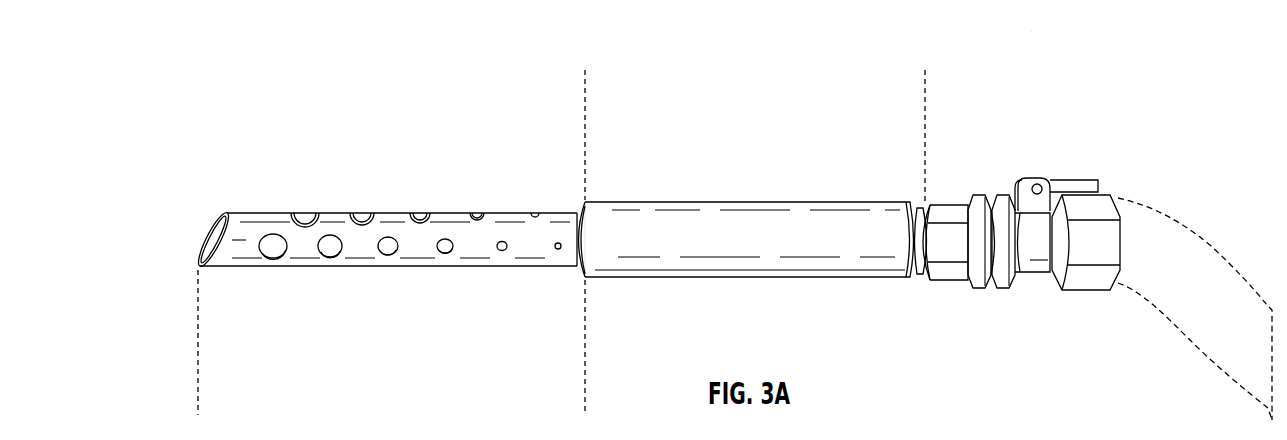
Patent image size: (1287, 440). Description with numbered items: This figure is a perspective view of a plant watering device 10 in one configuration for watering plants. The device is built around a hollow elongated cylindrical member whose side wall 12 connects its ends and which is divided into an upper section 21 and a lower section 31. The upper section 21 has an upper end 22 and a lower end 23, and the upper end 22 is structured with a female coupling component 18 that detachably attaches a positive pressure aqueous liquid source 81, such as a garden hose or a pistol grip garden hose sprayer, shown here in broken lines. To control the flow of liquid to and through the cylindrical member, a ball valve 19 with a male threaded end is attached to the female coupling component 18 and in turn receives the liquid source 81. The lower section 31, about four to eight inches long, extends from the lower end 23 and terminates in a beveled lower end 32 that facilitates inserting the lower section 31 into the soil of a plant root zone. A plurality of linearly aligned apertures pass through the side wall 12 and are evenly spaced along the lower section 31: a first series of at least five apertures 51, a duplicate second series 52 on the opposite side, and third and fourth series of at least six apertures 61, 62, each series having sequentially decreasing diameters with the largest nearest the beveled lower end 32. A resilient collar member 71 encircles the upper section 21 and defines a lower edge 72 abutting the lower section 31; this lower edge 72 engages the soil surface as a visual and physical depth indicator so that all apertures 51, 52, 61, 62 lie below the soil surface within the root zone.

The plant watering device 10 is at (1032, 30).
The side wall 12 is at (576, 212).
The female coupling component 18 is at (940, 207).
The ball valve 19 is at (1097, 291).
The upper section 21 is at (924, 89).
The upper end 22 is at (888, 294).
The lower end 23 is at (613, 182).
The lower section 31 is at (584, 403).
The beveled lower end 32 is at (195, 224).
The first series of at least five apertures 51 is at (415, 156).
The second series of at least five apertures 52 is at (535, 213).
The third series of at least six apertures 61 is at (417, 306).
The fourth series of at least six apertures 62 is at (575, 250).
The resilient collar member 71 is at (770, 227).
The lower edge 72 is at (557, 253).
The positive pressure aqueous liquid source 81 is at (1190, 230).